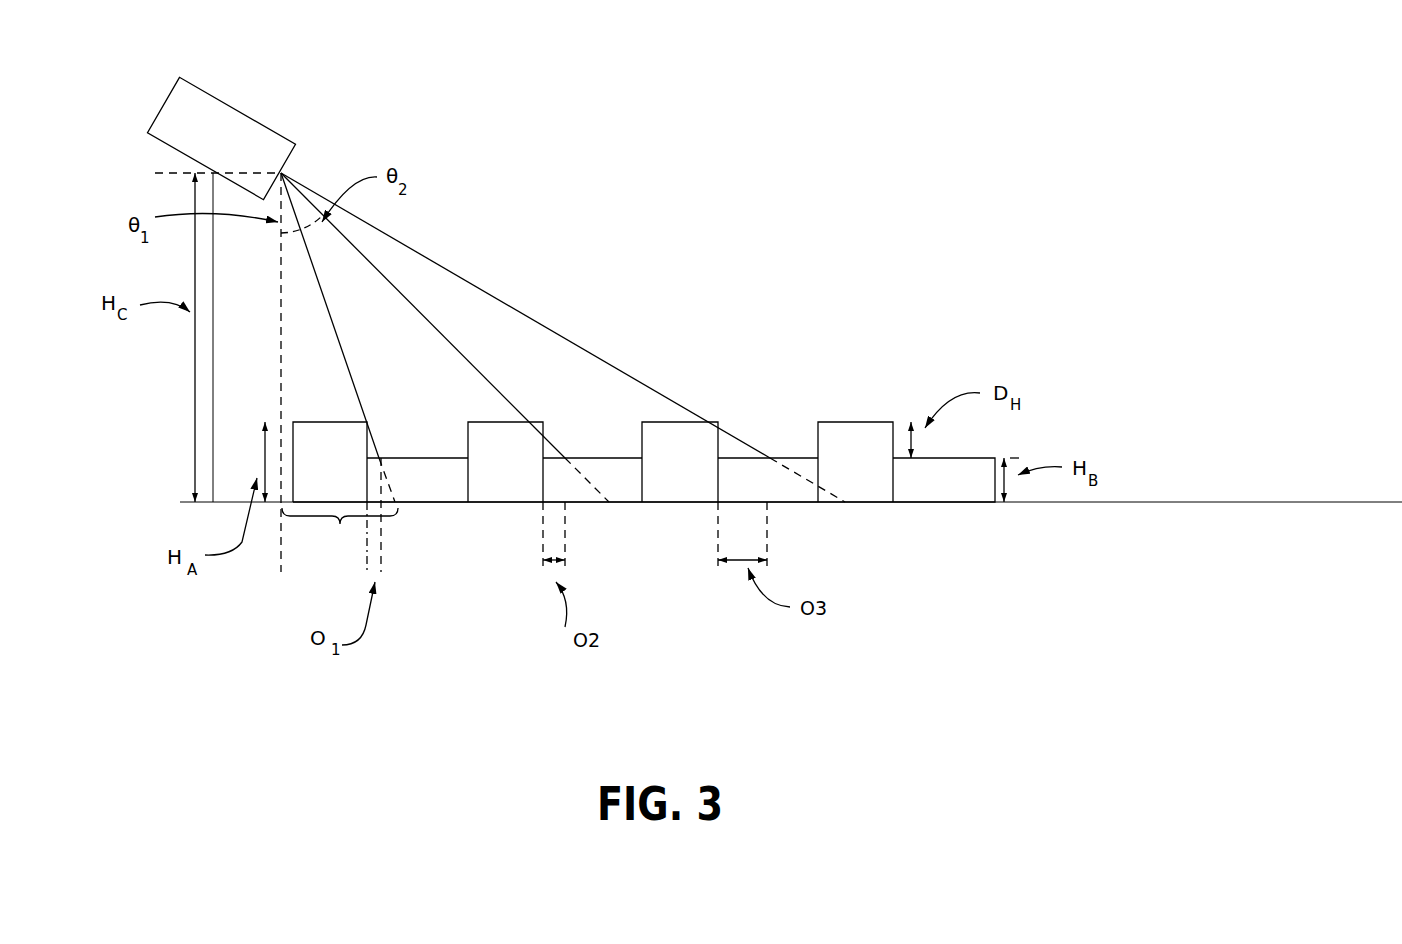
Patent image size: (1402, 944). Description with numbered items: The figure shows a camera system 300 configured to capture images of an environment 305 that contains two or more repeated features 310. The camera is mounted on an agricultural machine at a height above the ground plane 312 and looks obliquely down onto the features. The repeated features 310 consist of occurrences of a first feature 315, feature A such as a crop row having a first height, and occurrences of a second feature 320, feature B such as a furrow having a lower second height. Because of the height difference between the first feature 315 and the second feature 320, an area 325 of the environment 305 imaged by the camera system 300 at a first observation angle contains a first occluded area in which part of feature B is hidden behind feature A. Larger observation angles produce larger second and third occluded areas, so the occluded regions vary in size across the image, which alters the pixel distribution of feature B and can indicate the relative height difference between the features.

The camera system 300 is at (248, 95).
The environment 305 is at (1003, 272).
The repeated features 310 is at (455, 412).
The ground plane 312 is at (1098, 507).
The first feature 315 is at (867, 420).
The second feature 320 is at (945, 505).
The area 325 is at (340, 527).